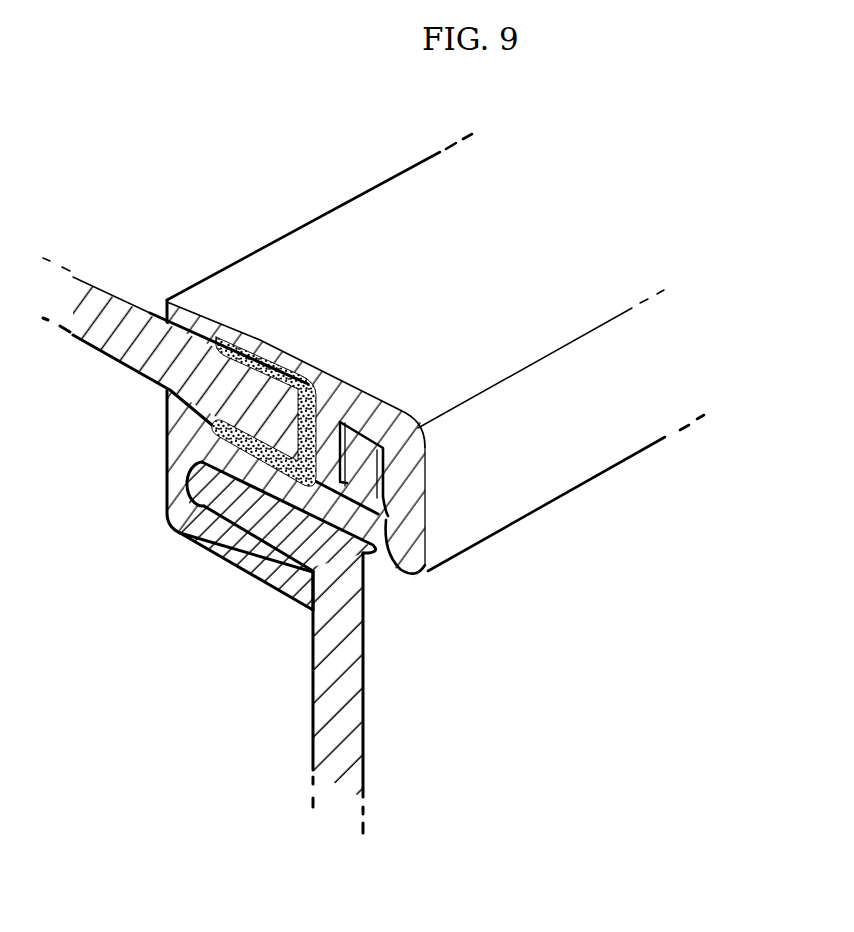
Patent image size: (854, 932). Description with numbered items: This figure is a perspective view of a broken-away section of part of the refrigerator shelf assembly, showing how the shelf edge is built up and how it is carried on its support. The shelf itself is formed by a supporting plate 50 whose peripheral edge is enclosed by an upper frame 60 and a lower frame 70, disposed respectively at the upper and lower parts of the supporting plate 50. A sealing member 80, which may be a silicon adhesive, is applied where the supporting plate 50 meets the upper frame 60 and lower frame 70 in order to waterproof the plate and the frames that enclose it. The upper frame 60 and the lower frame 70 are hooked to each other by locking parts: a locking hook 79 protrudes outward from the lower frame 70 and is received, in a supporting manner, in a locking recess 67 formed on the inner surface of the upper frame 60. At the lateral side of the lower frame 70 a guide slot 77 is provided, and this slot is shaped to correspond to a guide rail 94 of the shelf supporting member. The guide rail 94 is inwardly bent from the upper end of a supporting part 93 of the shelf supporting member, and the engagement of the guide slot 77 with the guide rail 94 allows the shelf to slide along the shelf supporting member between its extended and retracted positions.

The supporting plate 50 is at (120, 280).
The upper frame 60 is at (322, 374).
The locking recess 67 is at (417, 575).
The lower frame 70 is at (267, 570).
The guide slot 77 is at (207, 510).
The locking hook 79 is at (392, 514).
The sealing member 80 is at (255, 357).
The supporting part 93 is at (347, 692).
The guide rail 94 is at (193, 538).